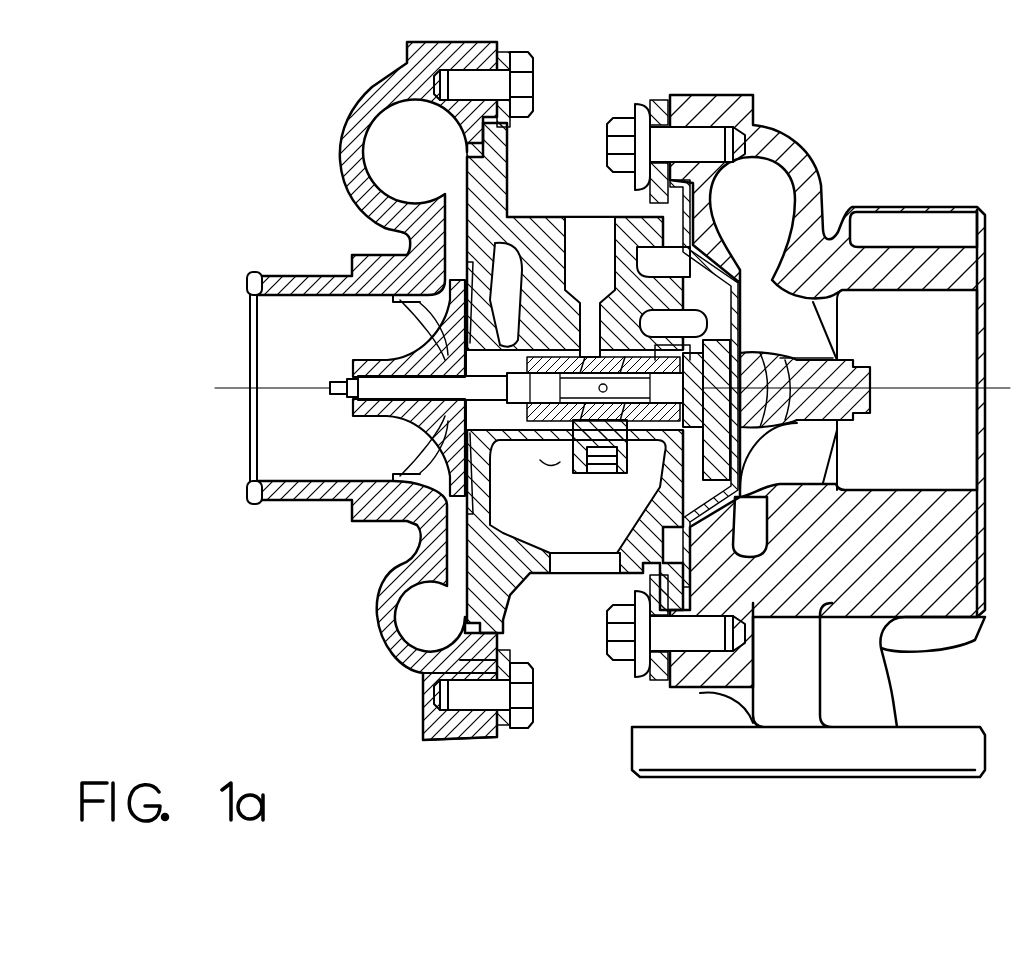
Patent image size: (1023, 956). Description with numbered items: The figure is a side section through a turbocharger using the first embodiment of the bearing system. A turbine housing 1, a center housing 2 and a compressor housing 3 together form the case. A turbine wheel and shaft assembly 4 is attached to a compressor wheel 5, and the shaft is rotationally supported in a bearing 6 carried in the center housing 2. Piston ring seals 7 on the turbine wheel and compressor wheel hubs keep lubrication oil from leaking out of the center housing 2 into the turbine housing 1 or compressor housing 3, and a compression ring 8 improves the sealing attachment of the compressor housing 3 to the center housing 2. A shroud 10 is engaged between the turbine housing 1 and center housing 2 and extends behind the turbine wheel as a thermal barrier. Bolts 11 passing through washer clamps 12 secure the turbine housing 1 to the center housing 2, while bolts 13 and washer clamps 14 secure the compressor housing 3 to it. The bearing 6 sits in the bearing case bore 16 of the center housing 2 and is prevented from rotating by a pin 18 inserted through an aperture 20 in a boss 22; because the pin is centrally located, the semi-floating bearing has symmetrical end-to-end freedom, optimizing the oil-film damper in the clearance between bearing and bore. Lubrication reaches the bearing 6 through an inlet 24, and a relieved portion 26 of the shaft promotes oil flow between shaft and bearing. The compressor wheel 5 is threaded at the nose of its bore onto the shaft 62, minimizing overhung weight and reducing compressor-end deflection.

The turbine housing 1 is at (797, 150).
The center housing 2 is at (523, 210).
The compressor housing 3 is at (361, 97).
The turbine wheel and shaft assembly 4 is at (812, 318).
The compressor wheel 5 is at (411, 328).
The bearing 6 is at (556, 340).
The piston ring seals 7 is at (470, 418).
The compression ring 8 is at (468, 148).
The shroud 10 is at (717, 250).
The bolts 11 is at (626, 112).
The washer clamps 12 is at (666, 96).
The bolts 13 is at (533, 58).
The washer clamps 14 is at (503, 46).
The bearing case bore 16 is at (657, 441).
The pin 18 is at (623, 477).
The aperture 20 is at (577, 478).
The boss 22 is at (563, 458).
The inlet 24 is at (610, 340).
The relieved portion 26 is at (683, 397).
The shaft 62 is at (340, 400).